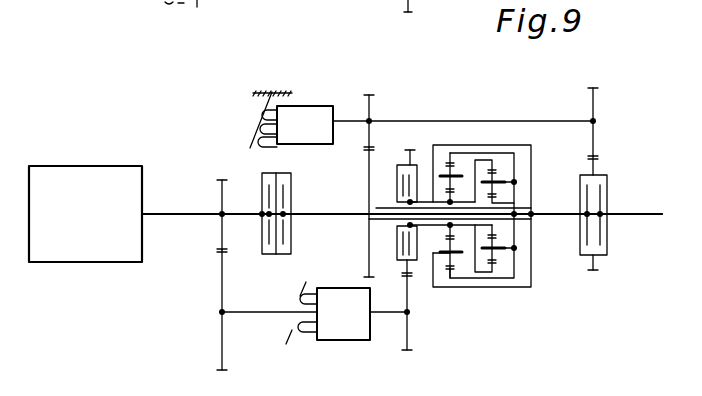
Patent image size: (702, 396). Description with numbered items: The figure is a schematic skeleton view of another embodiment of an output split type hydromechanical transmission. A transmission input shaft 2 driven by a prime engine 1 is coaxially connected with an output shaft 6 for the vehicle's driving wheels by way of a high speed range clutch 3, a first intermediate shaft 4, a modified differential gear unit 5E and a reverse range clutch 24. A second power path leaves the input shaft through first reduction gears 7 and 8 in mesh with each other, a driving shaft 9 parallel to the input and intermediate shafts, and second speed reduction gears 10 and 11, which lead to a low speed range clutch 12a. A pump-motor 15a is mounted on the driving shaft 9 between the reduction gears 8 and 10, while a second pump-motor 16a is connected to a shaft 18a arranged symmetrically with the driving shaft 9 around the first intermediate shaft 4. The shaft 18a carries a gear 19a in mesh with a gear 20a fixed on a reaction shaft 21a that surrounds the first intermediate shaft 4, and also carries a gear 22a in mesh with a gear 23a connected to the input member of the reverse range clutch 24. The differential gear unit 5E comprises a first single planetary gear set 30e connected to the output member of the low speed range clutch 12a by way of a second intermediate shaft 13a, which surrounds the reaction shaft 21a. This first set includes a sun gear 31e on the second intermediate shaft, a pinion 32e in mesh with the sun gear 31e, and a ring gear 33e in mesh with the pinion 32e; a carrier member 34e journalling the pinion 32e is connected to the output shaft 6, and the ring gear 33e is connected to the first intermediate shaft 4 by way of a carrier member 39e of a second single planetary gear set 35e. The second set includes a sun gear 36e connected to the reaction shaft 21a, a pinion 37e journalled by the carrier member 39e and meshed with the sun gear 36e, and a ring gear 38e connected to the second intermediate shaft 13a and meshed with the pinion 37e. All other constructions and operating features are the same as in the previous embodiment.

The prime engine 1 is at (92, 228).
The transmission input shaft 2 is at (173, 212).
The high speed range clutch 3 is at (272, 176).
The first intermediate shaft 4 is at (327, 219).
The modified differential gear unit 5E is at (477, 126).
The output shaft 6 is at (622, 216).
The first reduction gear 7 is at (218, 184).
The first reduction gear 8 is at (218, 264).
The driving shaft 9 is at (274, 313).
The second speed reduction gear 10 is at (409, 349).
The second speed reduction gear 11 is at (403, 258).
The low speed range clutch 12a is at (397, 172).
The second intermediate shaft 13a is at (442, 193).
The pump-motor 15a is at (340, 331).
The pump-motor 16a is at (312, 111).
The shaft 18a is at (557, 121).
The gear 19a is at (371, 98).
The gear 20a is at (368, 157).
The reaction shaft 21a is at (379, 207).
The gear 22a is at (602, 92).
The gear 23a is at (590, 158).
The reverse range clutch 24 is at (609, 188).
The first single planetary gear set 30e is at (458, 134).
The sun gear 31e is at (451, 250).
The pinion 32e is at (448, 262).
The ring gear 33e is at (448, 164).
The carrier member 34e is at (495, 279).
The second single planetary gear set 35e is at (500, 135).
The sun gear 36e is at (531, 205).
The pinion 37e is at (514, 248).
The ring gear 38e is at (500, 271).
The carrier member 39e is at (518, 224).